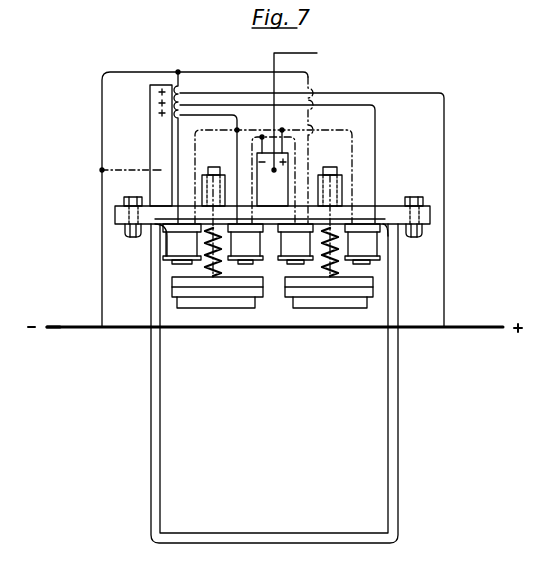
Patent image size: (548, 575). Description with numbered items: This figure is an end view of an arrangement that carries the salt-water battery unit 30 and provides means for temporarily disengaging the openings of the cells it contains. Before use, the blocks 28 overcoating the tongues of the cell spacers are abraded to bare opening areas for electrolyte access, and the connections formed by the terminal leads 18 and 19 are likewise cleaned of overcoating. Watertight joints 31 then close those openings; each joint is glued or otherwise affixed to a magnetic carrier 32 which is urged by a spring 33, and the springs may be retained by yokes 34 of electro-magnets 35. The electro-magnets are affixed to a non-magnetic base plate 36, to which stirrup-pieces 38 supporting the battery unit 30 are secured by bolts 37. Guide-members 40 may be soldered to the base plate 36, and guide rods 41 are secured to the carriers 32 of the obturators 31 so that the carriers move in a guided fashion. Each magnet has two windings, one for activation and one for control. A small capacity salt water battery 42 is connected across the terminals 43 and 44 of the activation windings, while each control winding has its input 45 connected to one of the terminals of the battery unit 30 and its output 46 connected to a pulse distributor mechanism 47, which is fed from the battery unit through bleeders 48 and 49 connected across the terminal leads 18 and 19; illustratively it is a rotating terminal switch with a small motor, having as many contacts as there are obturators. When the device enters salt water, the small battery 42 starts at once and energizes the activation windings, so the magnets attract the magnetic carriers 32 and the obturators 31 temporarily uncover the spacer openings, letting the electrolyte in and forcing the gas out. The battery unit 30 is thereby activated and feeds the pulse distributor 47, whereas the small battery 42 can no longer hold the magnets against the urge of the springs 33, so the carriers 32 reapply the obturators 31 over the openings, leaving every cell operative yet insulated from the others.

The terminal lead 18 is at (478, 330).
The terminal lead 19 is at (67, 330).
The block 28 is at (341, 308).
The battery unit 30 is at (355, 472).
The joint 31 is at (371, 296).
The magnetic carrier 32 is at (374, 280).
The spring 33 is at (162, 322).
The yoke 34 is at (176, 235).
The electro-magnet 35 is at (195, 239).
The base plate 36 is at (114, 212).
The bolt 37 is at (124, 198).
The stirrup-piece 38 is at (150, 525).
The guide-member 40 is at (342, 192).
The guide rod 41 is at (337, 171).
The salt water battery 42 is at (296, 102).
The terminal 43 is at (188, 258).
The terminal 44 is at (257, 238).
The input 45 is at (190, 237).
The output 46 is at (210, 275).
The pulse distributor mechanism 47 is at (149, 105).
The bleeder 48 is at (445, 140).
The bleeder 49 is at (101, 140).